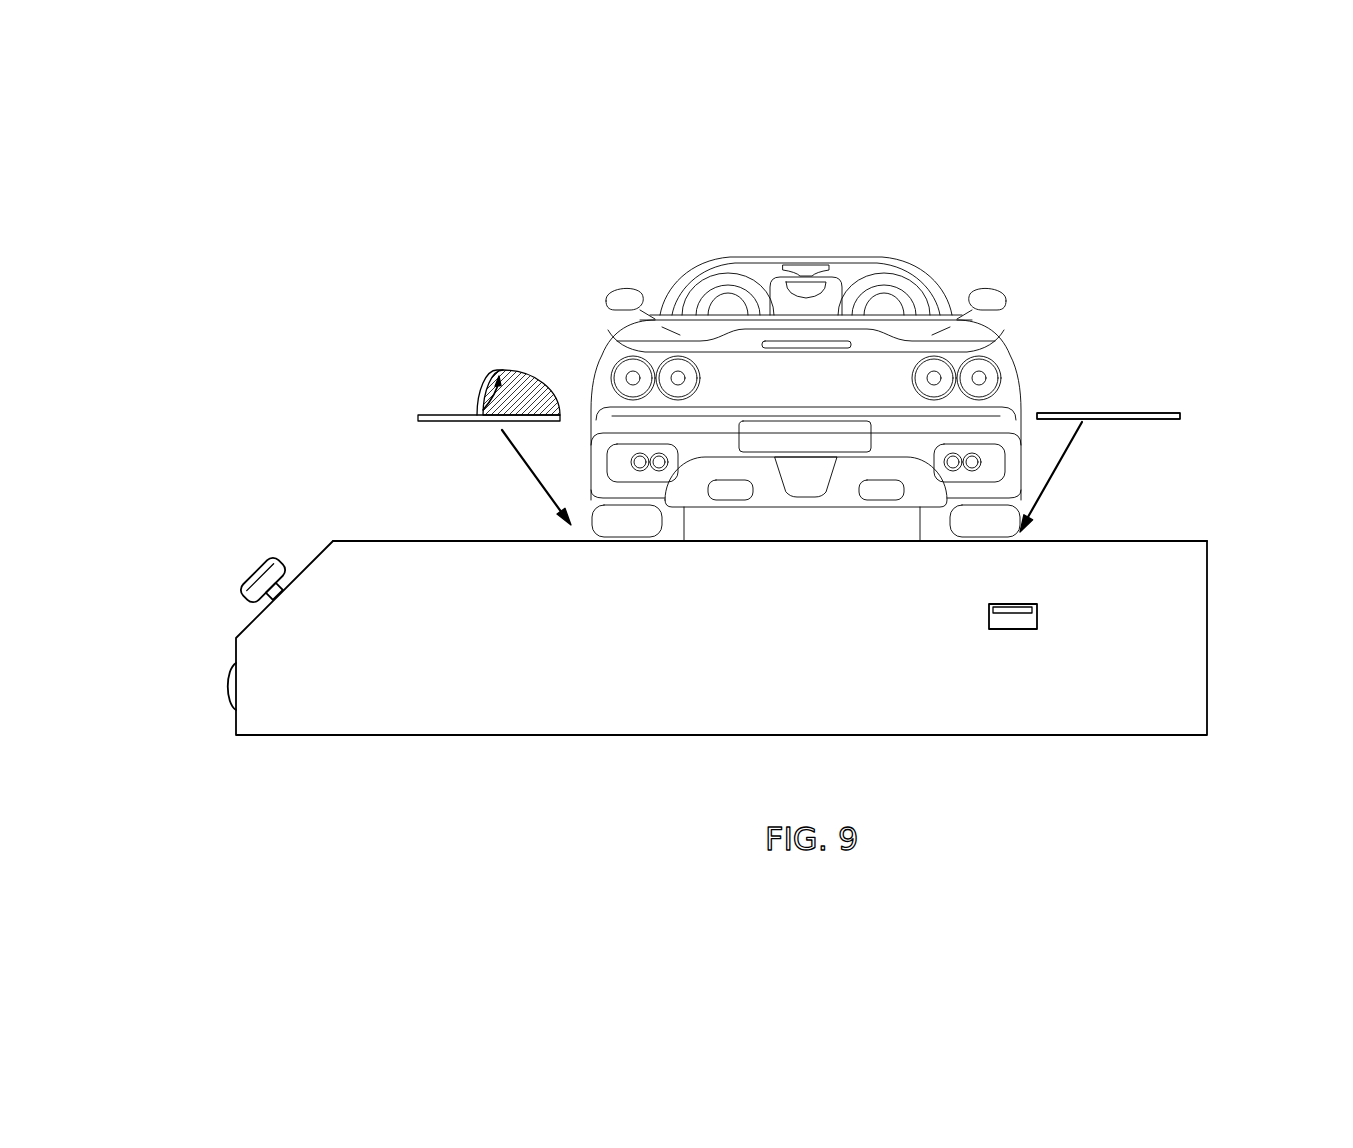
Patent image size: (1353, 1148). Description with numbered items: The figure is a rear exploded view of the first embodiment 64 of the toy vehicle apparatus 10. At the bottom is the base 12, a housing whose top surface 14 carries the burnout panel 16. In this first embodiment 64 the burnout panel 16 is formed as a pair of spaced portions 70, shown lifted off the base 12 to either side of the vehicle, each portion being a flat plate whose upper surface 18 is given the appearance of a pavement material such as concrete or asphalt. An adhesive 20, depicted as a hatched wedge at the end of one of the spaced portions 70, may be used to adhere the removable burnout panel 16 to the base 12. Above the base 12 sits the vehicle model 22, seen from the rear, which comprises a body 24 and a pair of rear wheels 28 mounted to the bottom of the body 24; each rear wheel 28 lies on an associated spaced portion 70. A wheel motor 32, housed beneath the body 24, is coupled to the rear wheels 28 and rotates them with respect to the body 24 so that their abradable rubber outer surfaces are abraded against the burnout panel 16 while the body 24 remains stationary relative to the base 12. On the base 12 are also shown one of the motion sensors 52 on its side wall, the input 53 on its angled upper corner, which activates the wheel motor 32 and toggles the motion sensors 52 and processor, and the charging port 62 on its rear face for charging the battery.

The toy vehicle apparatus 10 is at (1120, 248).
The base 12 is at (704, 658).
The top surface 14 is at (1190, 540).
The burnout panel 16 is at (1169, 377).
The upper surface 18 is at (1143, 413).
The adhesive 20 is at (518, 395).
The vehicle model 22 is at (811, 483).
The body 24 is at (865, 372).
The rear wheels 28 is at (617, 513).
The wheel motor 32 is at (730, 517).
The motion sensors 52 is at (228, 690).
The input 53 is at (232, 571).
The charging port 62 is at (1003, 629).
The first embodiment 64 is at (713, 413).
The spaced portions 70 is at (794, 397).